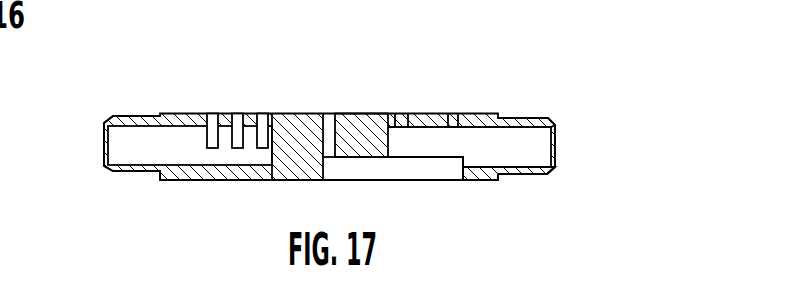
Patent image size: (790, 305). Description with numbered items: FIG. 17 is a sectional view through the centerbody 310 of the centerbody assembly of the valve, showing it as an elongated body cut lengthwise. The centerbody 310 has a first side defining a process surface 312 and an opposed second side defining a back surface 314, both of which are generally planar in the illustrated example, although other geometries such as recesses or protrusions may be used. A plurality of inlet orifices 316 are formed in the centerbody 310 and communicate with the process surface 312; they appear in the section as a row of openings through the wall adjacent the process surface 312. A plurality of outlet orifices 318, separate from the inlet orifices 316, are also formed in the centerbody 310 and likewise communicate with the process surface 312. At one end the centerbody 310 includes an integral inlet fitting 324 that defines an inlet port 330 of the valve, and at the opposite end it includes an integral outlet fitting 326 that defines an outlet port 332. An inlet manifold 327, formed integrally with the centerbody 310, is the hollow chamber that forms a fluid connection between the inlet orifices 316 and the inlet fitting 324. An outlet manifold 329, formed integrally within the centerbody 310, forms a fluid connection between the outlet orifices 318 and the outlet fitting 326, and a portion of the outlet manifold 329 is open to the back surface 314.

The centerbody 310 is at (347, 63).
The process surface 312 is at (462, 113).
The back surface 314 is at (482, 181).
The inlet orifices 316 is at (240, 116).
The outlet orifices 318 is at (402, 113).
The inlet fitting 324 is at (140, 173).
The outlet fitting 326 is at (540, 117).
The inlet manifold 327 is at (190, 148).
The outlet manifold 329 is at (424, 171).
The inlet port 330 is at (119, 154).
The outlet port 332 is at (548, 157).